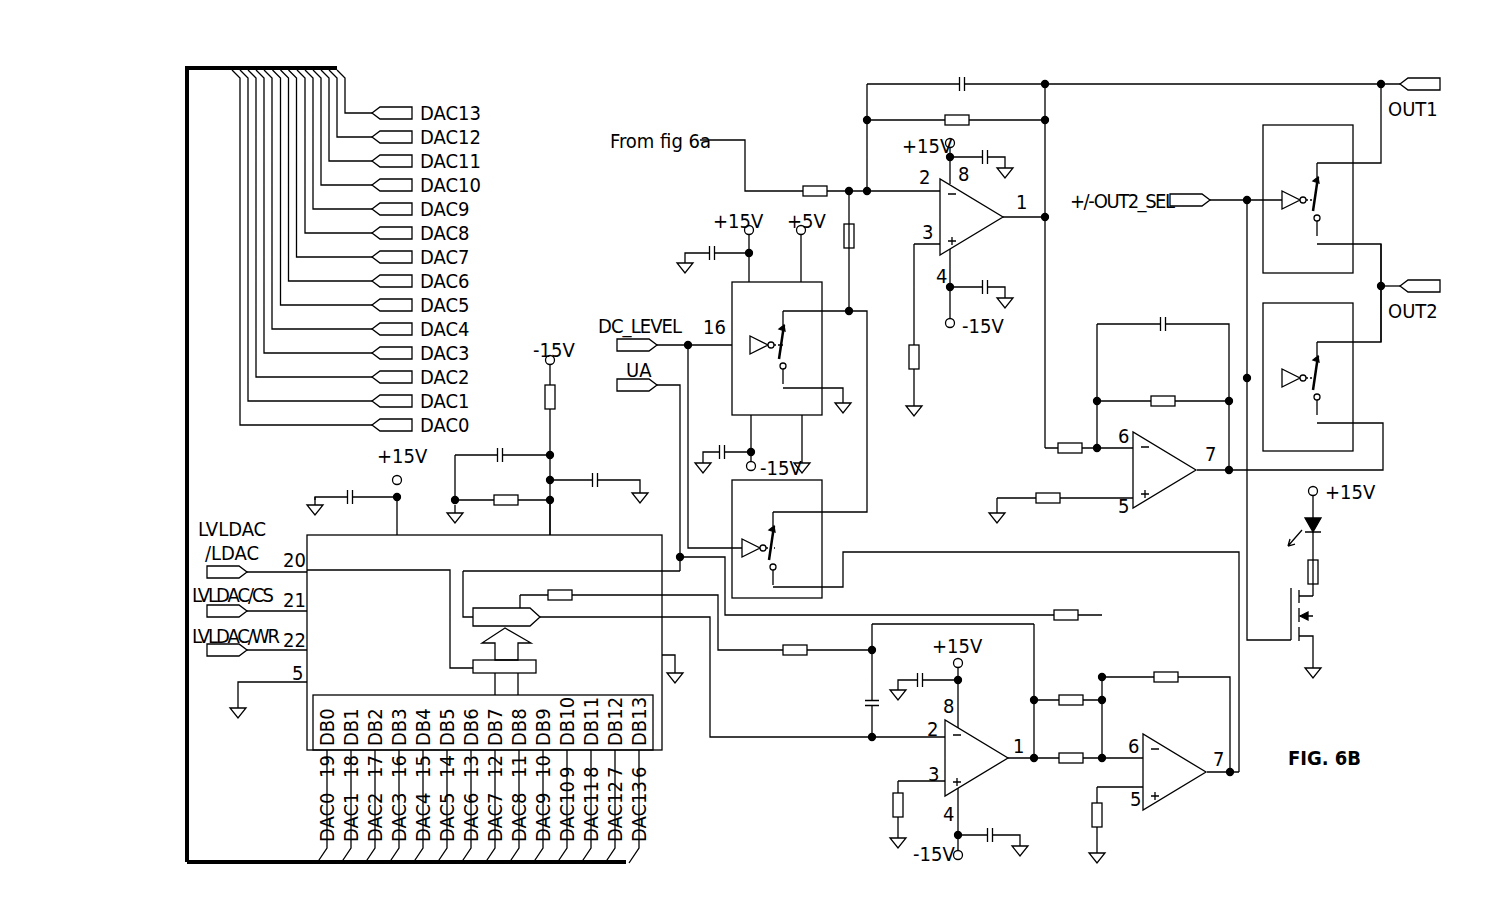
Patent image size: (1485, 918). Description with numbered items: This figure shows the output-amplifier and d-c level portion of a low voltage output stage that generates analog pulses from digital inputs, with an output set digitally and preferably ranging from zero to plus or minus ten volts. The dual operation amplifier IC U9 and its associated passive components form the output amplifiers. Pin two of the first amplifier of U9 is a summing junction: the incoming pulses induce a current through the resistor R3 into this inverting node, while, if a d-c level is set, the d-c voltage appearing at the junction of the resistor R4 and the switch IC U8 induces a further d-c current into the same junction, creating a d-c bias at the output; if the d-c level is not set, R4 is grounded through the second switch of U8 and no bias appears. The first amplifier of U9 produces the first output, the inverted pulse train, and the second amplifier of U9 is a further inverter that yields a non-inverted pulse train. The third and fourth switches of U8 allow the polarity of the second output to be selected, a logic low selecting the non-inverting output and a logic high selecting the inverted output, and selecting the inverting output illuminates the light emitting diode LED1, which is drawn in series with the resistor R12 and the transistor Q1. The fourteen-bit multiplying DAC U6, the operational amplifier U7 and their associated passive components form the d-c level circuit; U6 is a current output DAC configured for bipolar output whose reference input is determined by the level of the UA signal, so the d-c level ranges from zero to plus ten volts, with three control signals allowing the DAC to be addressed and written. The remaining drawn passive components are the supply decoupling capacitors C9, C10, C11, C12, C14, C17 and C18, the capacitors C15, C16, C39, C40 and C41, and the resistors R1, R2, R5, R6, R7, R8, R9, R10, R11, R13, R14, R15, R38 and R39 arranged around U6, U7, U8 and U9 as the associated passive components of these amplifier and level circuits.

The multiplying DAC U6 is at (493, 623).
The operational amplifier U7 is at (1075, 765).
The switch U8 is at (1052, 428).
The dual operation amplifier IC U9 is at (1068, 343).
The capacitor C9 is at (1005, 147).
The capacitor C10 is at (1006, 279).
The capacitor C11 is at (693, 234).
The capacitor C12 is at (717, 435).
The capacitor C14 is at (336, 474).
The capacitor C15 is at (508, 430).
The capacitor C16 is at (877, 705).
The capacitor C17 is at (911, 660).
The capacitor C18 is at (997, 814).
The capacitor C39 is at (597, 457).
The capacitor C40 is at (953, 75).
The capacitor C41 is at (1155, 313).
The resistor R1 is at (569, 394).
The resistor R2 is at (505, 488).
The resistor R3 is at (817, 180).
The resistor R4 is at (881, 251).
The resistor R5 is at (972, 109).
The resistor R6 is at (936, 358).
The resistor R7 is at (800, 639).
The resistor R8 is at (879, 802).
The resistor R9 is at (1075, 736).
The resistor R10 is at (1174, 652).
The resistor R11 is at (1078, 816).
The resistor R12 is at (1337, 573).
The resistor R13 is at (1160, 379).
The resistor R14 is at (1058, 458).
The resistor R15 is at (1066, 508).
The resistor R38 is at (1063, 603).
The resistor R39 is at (1075, 677).
The LED LED1 is at (1332, 521).
The transistor Q1 is at (1320, 624).